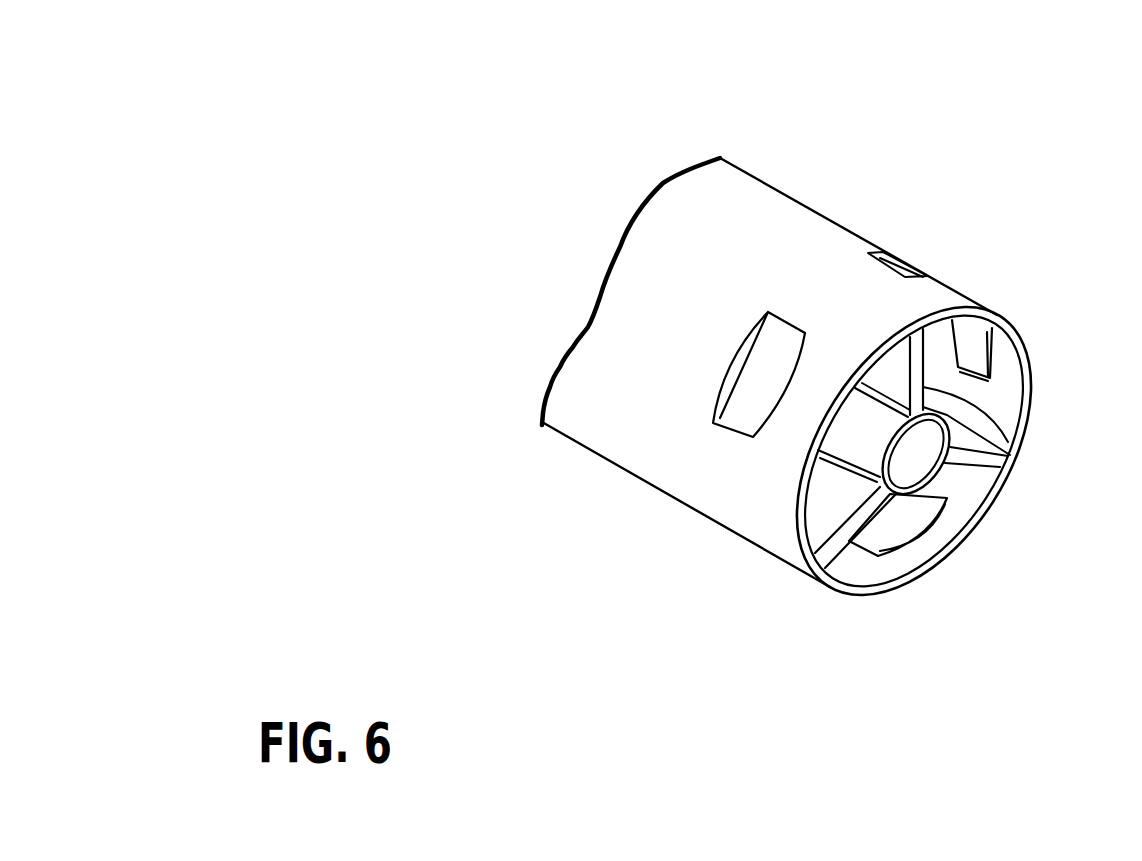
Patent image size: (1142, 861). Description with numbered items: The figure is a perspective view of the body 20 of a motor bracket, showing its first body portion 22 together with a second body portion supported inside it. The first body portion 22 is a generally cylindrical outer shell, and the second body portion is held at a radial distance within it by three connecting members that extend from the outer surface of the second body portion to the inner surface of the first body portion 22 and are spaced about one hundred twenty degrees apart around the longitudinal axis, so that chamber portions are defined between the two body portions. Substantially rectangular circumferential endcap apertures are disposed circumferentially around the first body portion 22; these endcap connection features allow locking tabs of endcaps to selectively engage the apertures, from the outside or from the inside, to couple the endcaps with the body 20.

The body 20 is at (816, 122).
The first body portion 22 is at (588, 388).